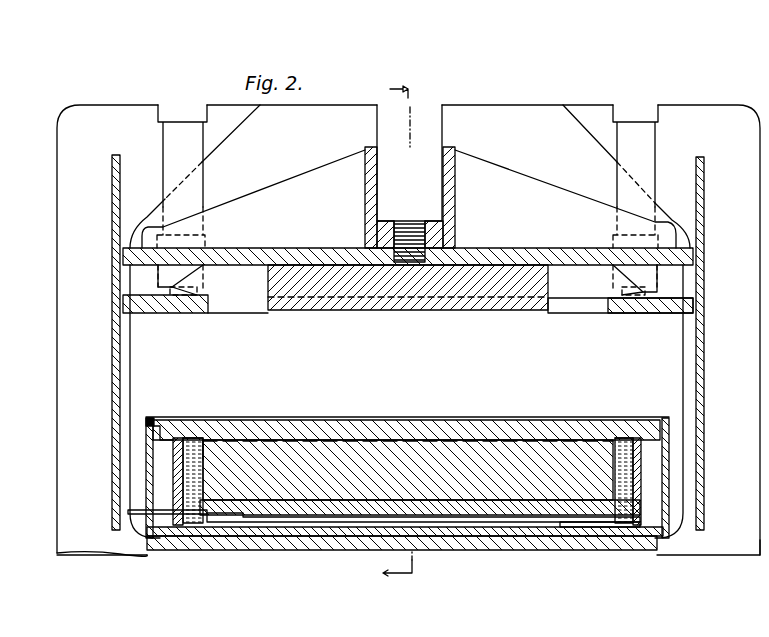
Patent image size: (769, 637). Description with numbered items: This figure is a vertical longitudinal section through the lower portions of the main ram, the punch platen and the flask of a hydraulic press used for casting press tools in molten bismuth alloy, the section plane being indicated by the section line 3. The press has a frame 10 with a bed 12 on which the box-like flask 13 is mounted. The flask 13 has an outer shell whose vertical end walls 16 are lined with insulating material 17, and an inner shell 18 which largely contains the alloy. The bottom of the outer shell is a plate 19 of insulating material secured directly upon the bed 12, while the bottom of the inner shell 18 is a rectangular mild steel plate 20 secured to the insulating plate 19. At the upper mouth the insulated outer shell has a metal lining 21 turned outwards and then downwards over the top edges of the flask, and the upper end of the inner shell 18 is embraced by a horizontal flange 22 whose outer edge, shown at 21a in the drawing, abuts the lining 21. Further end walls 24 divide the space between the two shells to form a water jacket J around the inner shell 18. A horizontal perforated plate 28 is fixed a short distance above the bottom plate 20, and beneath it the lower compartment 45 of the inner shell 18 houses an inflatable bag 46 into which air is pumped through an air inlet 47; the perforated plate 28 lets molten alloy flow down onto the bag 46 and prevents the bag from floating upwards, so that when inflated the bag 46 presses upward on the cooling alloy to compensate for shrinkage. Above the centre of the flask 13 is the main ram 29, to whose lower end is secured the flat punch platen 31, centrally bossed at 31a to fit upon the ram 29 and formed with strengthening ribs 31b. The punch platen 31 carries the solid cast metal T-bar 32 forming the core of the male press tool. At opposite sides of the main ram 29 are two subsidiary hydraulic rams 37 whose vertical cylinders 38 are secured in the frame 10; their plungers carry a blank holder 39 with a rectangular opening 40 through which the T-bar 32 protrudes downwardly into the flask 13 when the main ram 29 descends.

The frame 10 is at (740, 117).
The bed 12 is at (555, 549).
The flask 13 is at (762, 563).
The end walls 16 is at (147, 498).
The insulating material 17 is at (147, 530).
The inner shell 18 is at (202, 458).
The plate of insulating material 19 is at (272, 537).
The mild steel plate 20 is at (235, 523).
The metal lining 21 is at (150, 422).
The flange lip 21a is at (157, 435).
The flange 22 is at (190, 437).
The end walls 24 is at (178, 478).
The perforated plate 28 is at (510, 500).
The main ram 29 is at (383, 135).
The punch platen 31 is at (321, 254).
The boss 31a is at (448, 208).
The strengthening ribs 31b is at (316, 190).
The T-bar 32 is at (528, 283).
The subsidiary hydraulic rams 37 is at (225, 321).
The vertical cylinders 38 is at (195, 175).
The blank holder 39 is at (156, 307).
The rectangular opening 40 is at (580, 305).
The lower compartment 45 is at (465, 516).
The inflatable bag 46 is at (593, 527).
The air inlet 47 is at (167, 514).
The water jacket J is at (620, 440).
The section line 3- 3 is at (407, 333).